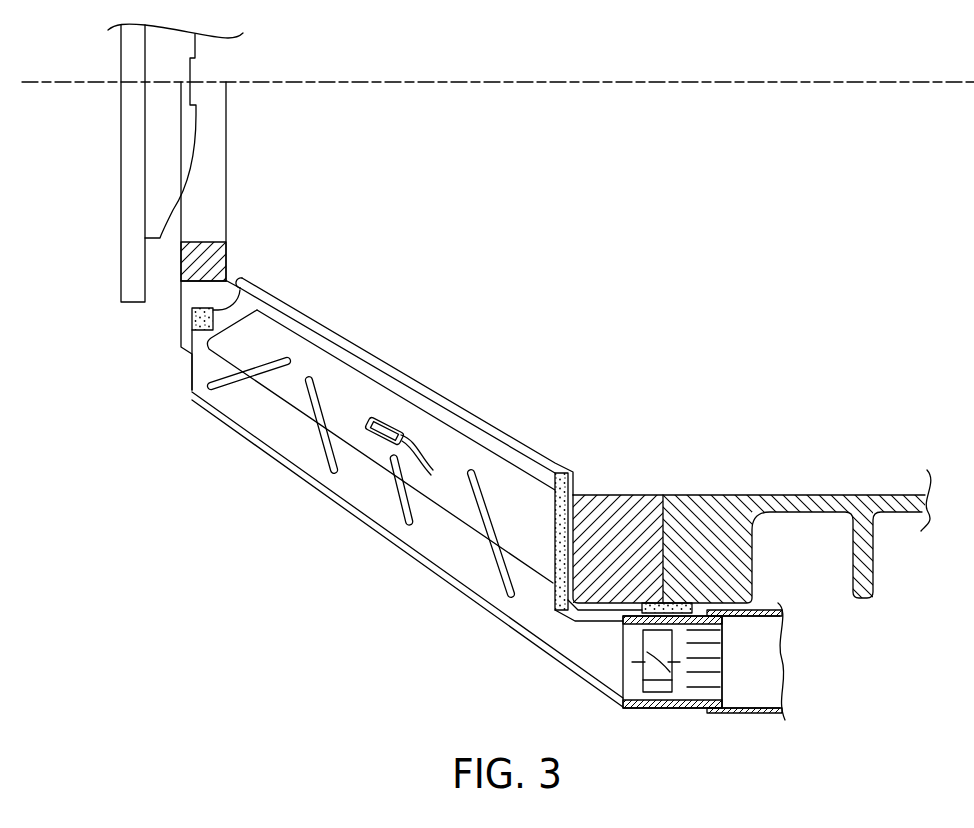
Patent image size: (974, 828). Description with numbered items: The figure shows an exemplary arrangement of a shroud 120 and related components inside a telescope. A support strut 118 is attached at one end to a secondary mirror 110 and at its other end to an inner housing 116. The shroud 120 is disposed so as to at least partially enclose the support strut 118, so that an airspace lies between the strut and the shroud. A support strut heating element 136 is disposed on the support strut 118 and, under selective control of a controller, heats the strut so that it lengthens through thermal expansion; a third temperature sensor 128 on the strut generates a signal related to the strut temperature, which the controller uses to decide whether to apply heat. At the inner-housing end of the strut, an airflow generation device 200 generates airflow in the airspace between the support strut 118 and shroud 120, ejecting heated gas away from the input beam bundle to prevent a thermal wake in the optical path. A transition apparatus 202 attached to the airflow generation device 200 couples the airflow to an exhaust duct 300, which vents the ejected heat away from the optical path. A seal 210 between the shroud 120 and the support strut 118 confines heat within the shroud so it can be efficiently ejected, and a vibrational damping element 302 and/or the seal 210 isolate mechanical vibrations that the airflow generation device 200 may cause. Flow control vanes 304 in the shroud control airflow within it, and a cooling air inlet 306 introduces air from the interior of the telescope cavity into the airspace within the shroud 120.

The secondary mirror 110 is at (120, 273).
The inner housing 116 is at (783, 493).
The support strut 118 is at (383, 478).
The shroud 120 is at (303, 477).
The third temperature sensor 128 is at (385, 421).
The support strut heating element 136 is at (290, 326).
The airflow generation device 200 is at (660, 708).
The transition apparatus 202 is at (737, 712).
The seal 210 is at (508, 480).
The exhaust duct 300 is at (772, 662).
The vibrational damping element 302 is at (677, 605).
The flow control vanes 304 is at (495, 565).
The cooling air inlet 306 is at (192, 373).